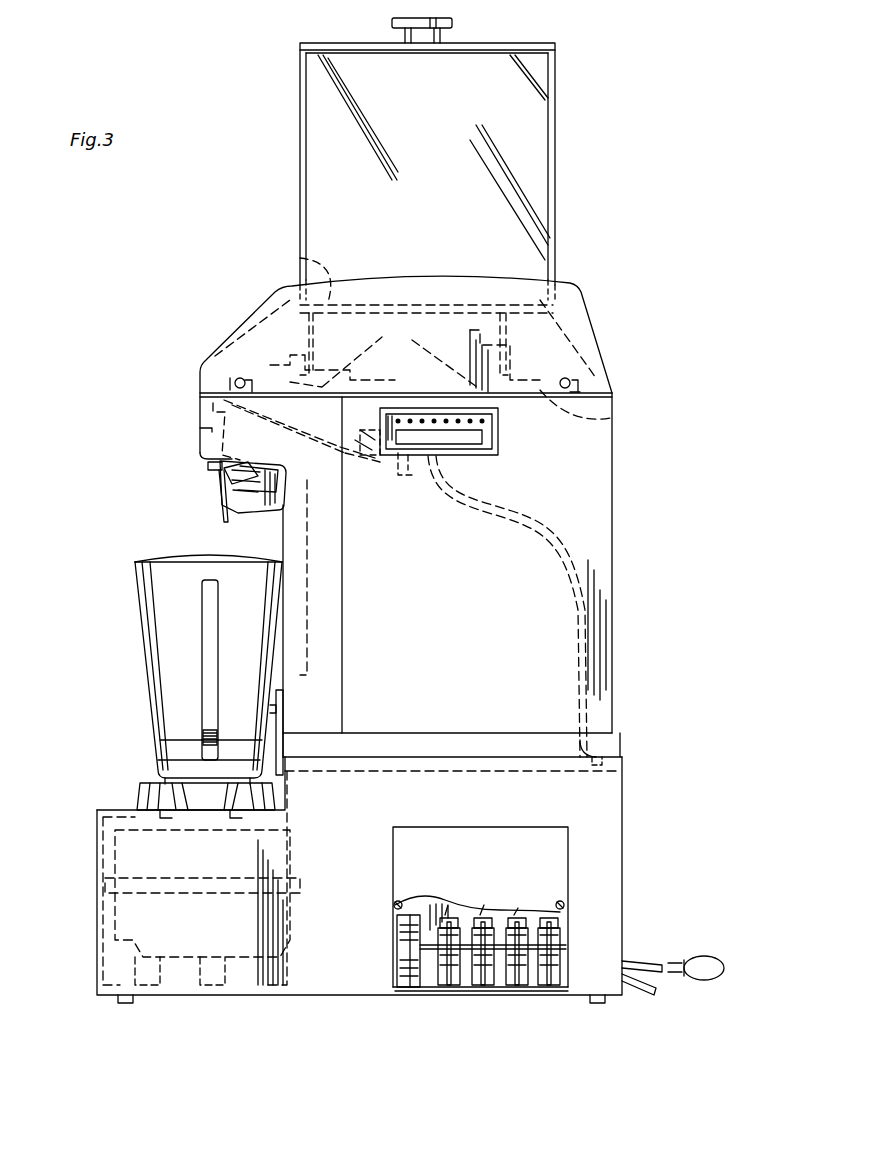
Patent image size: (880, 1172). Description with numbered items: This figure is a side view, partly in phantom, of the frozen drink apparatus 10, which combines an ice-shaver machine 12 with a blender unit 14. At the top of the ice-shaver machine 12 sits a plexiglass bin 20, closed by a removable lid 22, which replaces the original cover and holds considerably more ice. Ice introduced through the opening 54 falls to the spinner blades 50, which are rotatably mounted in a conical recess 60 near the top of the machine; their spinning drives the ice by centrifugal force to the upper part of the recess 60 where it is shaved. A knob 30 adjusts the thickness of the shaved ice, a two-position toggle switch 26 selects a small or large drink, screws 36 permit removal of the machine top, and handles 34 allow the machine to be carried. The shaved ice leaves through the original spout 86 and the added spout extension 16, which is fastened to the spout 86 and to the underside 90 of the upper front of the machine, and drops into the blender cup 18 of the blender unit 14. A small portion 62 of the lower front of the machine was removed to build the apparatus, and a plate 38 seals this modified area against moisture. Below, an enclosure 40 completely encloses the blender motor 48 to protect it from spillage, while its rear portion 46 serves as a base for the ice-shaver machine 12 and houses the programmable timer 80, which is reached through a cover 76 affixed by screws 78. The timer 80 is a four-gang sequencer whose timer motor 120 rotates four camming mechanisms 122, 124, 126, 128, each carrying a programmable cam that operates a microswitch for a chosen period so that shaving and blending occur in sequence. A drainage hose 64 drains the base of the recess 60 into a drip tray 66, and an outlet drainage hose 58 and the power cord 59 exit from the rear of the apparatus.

The frozen drink apparatus 10 is at (147, 307).
The ice-shaver machine 12 is at (613, 533).
The blender unit 14 is at (134, 797).
The spout extension 16 is at (220, 512).
The blender cup 18 is at (140, 636).
The bin 20 is at (556, 152).
The lid 22 is at (536, 44).
The toggle switch 26 is at (200, 428).
The knob 30 is at (235, 485).
The handles 34 is at (500, 440).
The screws 36 is at (238, 379).
The plate 38 is at (276, 722).
The enclosure 40 is at (106, 886).
The rear portion 46 is at (458, 817).
The blender motor 48 is at (103, 915).
The spinner blades 50 is at (383, 357).
The opening 54 is at (304, 260).
The outlet drainage hose 58 is at (652, 998).
The power cord 59 is at (652, 962).
The conical recess 60 is at (612, 419).
The small portion 62 is at (250, 740).
The drainage hose 64 is at (520, 498).
The drip tray 66 is at (618, 742).
The cover 76 is at (545, 870).
The screws 78 is at (393, 905).
The programmable timer 80 is at (435, 985).
The original spout 86 is at (225, 440).
The underside 90 is at (224, 476).
The timer motor 120 is at (410, 950).
The camming mechanism 122 is at (462, 975).
The camming mechanism 124 is at (494, 975).
The camming mechanism 126 is at (528, 975).
The camming mechanism 128 is at (558, 975).